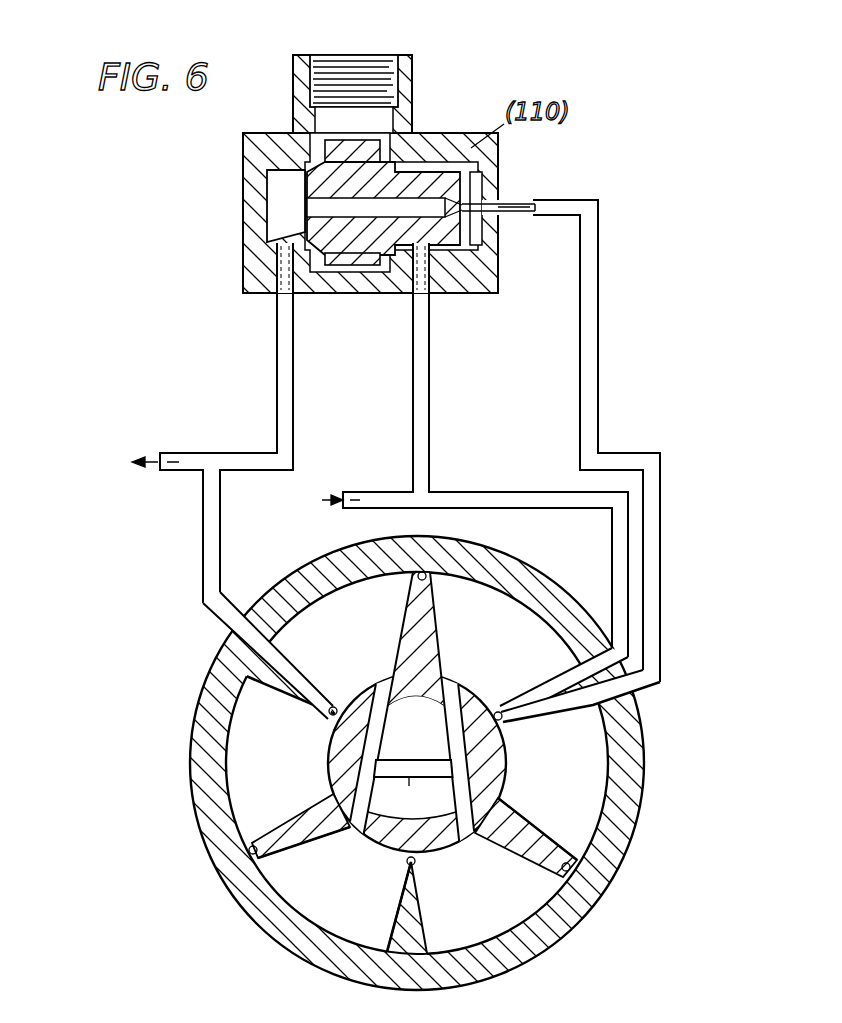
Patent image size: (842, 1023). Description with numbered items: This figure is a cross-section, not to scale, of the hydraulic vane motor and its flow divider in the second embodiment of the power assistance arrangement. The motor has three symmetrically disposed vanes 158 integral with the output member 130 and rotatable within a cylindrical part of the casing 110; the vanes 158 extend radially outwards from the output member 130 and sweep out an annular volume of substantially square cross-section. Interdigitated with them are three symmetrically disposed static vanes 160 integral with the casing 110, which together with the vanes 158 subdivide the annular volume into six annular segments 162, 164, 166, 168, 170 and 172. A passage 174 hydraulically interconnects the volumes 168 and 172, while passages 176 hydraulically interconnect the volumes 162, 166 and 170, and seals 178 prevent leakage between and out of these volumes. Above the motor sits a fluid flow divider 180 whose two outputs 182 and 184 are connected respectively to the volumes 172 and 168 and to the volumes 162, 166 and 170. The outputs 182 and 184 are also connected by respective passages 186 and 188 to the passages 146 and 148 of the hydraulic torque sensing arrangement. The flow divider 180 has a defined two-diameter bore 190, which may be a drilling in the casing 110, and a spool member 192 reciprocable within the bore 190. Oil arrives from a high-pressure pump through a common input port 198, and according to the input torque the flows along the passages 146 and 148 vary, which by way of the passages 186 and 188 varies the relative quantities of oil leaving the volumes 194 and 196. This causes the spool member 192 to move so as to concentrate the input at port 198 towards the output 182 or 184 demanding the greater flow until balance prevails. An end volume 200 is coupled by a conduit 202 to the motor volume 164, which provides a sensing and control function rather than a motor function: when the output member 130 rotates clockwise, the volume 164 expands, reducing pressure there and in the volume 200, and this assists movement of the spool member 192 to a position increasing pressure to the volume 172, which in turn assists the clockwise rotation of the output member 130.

The casing 110 is at (206, 749).
The output member 130 is at (492, 784).
The passage 146 is at (107, 463).
The passage 148 is at (293, 503).
The vanes 158 is at (414, 602).
The static vanes 160 is at (299, 688).
The annular segment 162 is at (500, 640).
The annular segment 164 is at (555, 775).
The annular segment 166 is at (494, 910).
The annular segment 168 is at (335, 885).
The annular segment 170 is at (280, 755).
The annular segment 172 is at (350, 640).
The passage 174 is at (378, 722).
The passages 176 is at (456, 798).
The seals 178 is at (429, 580).
The fluid flow divider 180 is at (443, 106).
The output 182 is at (283, 357).
The output 184 is at (421, 357).
The passage 186 is at (194, 454).
The passage 188 is at (387, 491).
The two-diameter bore 190 is at (268, 183).
The spool member 192 is at (316, 236).
The volume 194 is at (278, 215).
The volume 196 is at (410, 247).
The common input port 198 is at (346, 78).
The end volume 200 is at (486, 197).
The conduit 202 is at (589, 356).